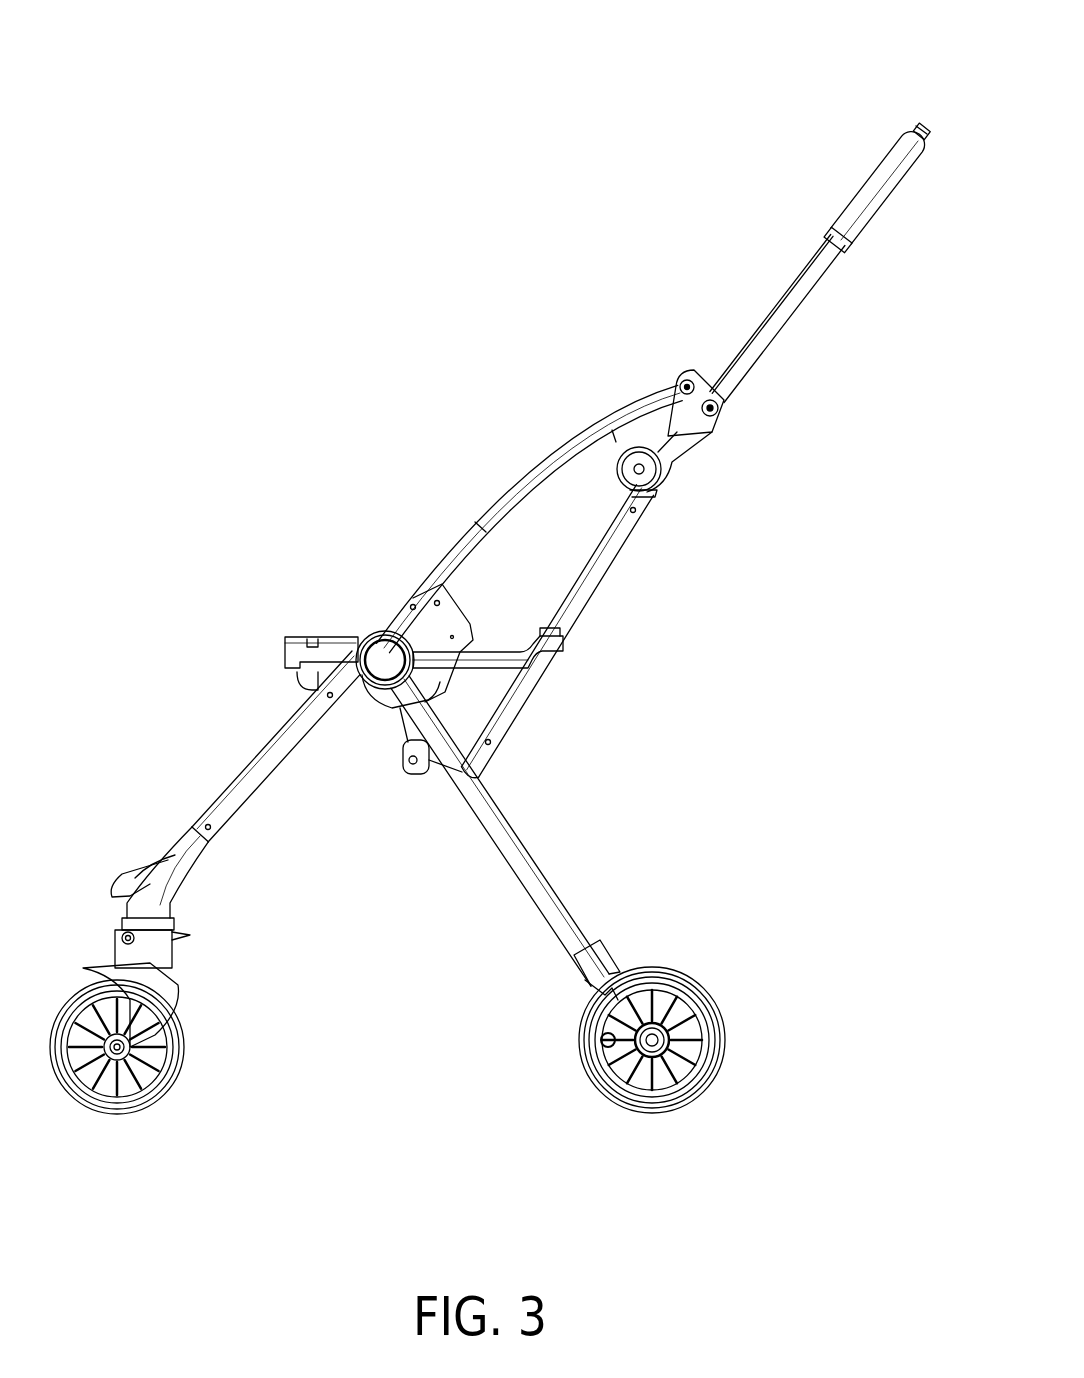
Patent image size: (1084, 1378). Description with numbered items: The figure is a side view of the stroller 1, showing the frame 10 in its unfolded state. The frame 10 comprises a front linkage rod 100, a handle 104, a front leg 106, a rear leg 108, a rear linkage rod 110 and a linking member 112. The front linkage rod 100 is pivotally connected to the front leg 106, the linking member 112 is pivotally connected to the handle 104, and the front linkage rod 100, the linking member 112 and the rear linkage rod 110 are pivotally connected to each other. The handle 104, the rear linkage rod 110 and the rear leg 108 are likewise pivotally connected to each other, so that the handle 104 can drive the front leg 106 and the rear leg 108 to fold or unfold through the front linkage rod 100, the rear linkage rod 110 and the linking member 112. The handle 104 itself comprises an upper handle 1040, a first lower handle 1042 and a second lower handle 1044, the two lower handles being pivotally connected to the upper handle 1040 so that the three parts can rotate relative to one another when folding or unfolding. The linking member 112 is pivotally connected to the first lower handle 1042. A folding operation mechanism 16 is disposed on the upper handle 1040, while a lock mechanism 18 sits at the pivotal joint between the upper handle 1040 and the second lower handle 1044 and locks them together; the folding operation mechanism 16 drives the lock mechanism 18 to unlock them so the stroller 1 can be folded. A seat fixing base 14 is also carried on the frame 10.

The stroller 1 is at (291, 121).
The frame 10 is at (488, 445).
The seat fixing base 14 is at (298, 634).
The folding operation mechanism 16 is at (925, 128).
The lock mechanism 18 is at (643, 480).
The front linkage rod 100 is at (368, 733).
The handle 104 is at (850, 203).
The front leg 106 is at (233, 782).
The rear leg 108 is at (560, 892).
The rear linkage rod 110 is at (430, 778).
The linking member 112 is at (440, 682).
The upper handle 1040 is at (777, 318).
The first lower handle 1042 is at (550, 462).
The second lower handle 1044 is at (613, 566).